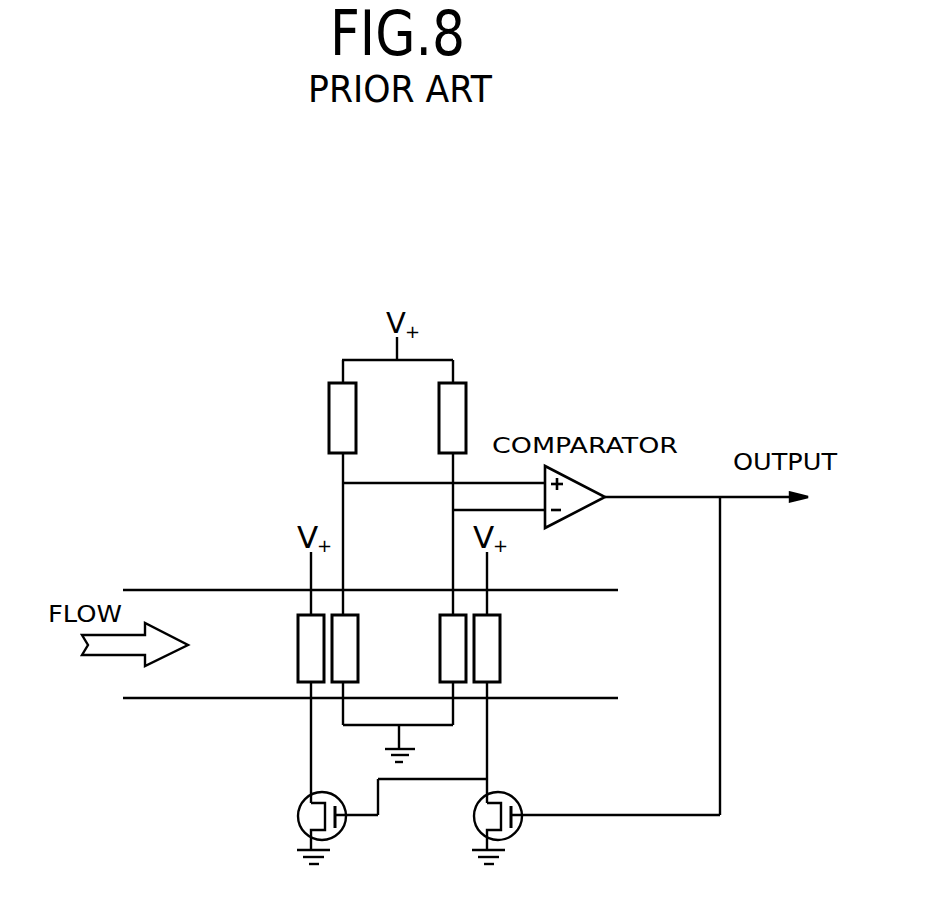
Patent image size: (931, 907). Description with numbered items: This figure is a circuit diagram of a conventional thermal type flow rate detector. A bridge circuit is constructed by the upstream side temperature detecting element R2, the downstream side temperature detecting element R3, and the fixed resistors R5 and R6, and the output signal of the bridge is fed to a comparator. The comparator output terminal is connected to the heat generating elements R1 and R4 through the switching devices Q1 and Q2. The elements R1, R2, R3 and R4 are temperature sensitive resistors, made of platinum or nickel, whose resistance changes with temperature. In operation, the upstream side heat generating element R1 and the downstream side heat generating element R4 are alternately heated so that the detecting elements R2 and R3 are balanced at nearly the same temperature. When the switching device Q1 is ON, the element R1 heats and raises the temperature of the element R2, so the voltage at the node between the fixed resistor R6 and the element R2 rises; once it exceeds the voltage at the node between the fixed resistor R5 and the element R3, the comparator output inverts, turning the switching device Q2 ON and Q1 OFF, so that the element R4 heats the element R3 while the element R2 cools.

The upstream side heat generating element R1 is at (311, 648).
The upstream side temperature detecting element R2 is at (345, 648).
The downstream side temperature detecting element R3 is at (453, 648).
The downstream side heat generating element R4 is at (487, 648).
The fixed resistor R5 is at (452, 418).
The fixed resistor R6 is at (342, 418).
The switching device Q1 is at (337, 828).
The switching device Q2 is at (514, 828).